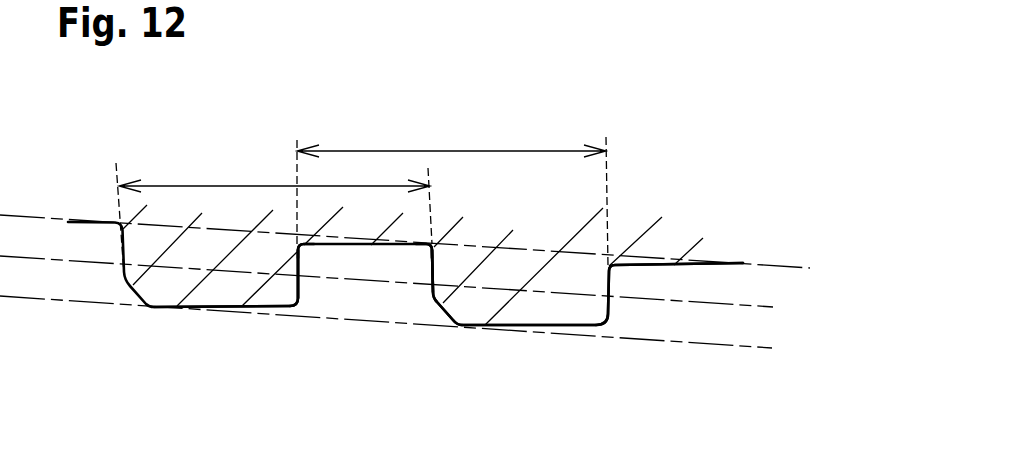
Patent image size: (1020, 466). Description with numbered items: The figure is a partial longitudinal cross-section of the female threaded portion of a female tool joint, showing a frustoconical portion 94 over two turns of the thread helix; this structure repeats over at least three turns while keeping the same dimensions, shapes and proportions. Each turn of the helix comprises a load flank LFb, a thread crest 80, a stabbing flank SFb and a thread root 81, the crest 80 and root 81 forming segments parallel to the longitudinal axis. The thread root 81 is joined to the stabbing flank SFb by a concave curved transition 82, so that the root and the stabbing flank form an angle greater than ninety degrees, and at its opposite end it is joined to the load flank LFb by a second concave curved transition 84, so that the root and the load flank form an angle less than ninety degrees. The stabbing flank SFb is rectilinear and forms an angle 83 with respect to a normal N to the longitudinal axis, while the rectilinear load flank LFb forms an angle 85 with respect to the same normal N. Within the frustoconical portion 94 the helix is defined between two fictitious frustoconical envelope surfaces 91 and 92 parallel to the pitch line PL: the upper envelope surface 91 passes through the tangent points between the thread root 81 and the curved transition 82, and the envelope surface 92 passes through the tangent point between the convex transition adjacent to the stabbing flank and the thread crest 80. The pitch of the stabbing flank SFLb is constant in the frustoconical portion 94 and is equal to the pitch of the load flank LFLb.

The thread crest 80 is at (200, 310).
The thread root 81 is at (650, 266).
The concave curved transition 82 is at (428, 246).
The angle 83 is at (426, 170).
The second concave curved transition 84 is at (302, 250).
The angle 85 is at (296, 172).
The fictitious upper envelope surface 91 is at (768, 263).
The fictitious envelope surface 92 is at (752, 346).
The frustoconical portion 94 is at (537, 407).
The normal N is at (122, 162).
The pitch line PL is at (728, 306).
The pitch of the stabbing flank SFLb is at (274, 175).
The pitch of the load flank LFLb is at (451, 140).
The stabbing flank SFb is at (434, 270).
The load flank LFb is at (300, 289).